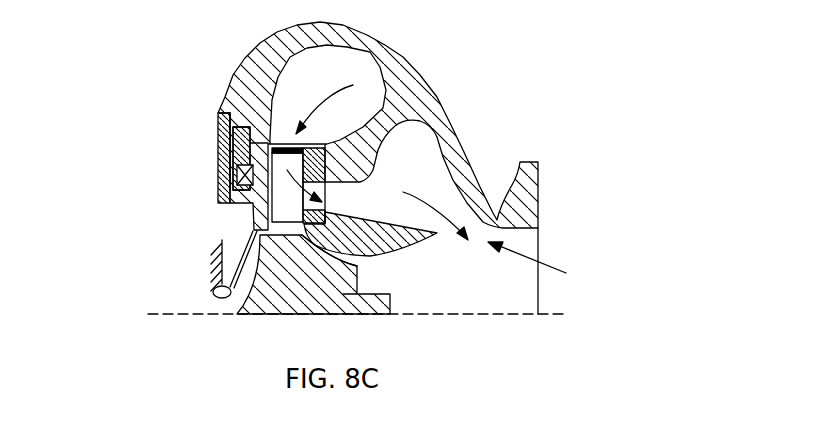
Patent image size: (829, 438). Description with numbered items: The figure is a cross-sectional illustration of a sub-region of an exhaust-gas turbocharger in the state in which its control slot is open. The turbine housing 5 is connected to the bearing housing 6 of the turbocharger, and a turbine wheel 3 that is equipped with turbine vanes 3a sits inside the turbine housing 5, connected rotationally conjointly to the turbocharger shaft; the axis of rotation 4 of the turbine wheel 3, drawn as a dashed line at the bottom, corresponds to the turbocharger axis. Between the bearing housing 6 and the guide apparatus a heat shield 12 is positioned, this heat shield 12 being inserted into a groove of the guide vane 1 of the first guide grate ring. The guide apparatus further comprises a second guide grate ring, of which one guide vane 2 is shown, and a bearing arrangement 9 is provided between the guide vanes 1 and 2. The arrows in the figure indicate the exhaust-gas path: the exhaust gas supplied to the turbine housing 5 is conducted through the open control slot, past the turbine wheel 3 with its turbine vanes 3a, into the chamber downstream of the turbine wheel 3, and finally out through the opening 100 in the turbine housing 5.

The guide vane 1 is at (218, 138).
The guide vane 2 is at (218, 130).
The turbine wheel 3 is at (395, 295).
The turbine vanes 3a is at (351, 277).
The axis of rotation 4 is at (516, 316).
The turbine housing 5 is at (390, 63).
The bearing housing 6 is at (207, 255).
The bearing arrangement 9 is at (218, 167).
The heat shield 12 is at (240, 240).
The opening 100 is at (552, 267).